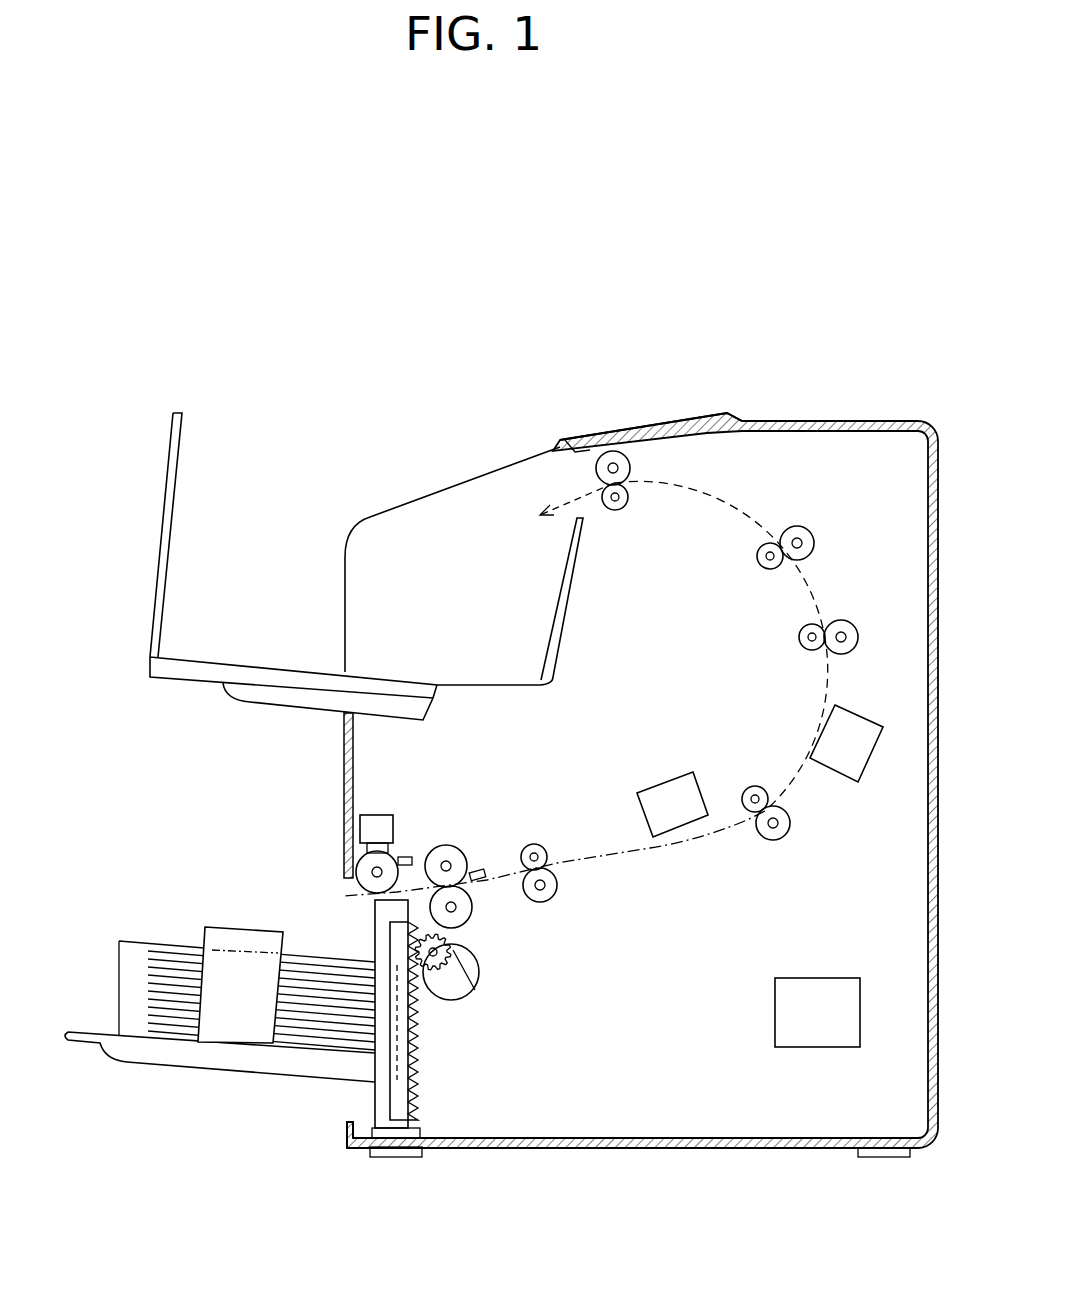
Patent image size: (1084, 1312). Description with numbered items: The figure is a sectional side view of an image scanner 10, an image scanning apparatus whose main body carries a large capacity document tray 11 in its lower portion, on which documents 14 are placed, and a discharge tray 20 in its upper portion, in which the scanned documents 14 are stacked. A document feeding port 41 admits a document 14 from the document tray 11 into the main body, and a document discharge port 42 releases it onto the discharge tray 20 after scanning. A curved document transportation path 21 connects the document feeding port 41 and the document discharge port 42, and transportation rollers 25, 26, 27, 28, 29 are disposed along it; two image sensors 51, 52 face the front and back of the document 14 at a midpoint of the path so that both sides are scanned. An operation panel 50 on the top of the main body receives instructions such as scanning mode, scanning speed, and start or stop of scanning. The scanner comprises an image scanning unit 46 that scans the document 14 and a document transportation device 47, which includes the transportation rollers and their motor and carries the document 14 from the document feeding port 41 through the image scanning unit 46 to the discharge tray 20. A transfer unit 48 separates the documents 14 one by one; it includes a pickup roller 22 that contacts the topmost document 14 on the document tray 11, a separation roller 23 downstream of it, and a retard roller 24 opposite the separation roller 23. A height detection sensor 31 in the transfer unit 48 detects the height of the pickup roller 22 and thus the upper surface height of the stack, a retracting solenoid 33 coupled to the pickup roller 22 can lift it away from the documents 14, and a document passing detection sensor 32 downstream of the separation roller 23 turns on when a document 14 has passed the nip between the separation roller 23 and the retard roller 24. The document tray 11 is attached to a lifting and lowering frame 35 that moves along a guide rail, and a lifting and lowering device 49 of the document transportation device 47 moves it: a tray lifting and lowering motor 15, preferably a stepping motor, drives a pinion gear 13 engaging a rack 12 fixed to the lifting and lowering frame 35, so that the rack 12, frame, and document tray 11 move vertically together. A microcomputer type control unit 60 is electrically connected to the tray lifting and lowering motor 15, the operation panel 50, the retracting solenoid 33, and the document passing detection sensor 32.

The image scanner 10 is at (787, 342).
The document tray 11 is at (142, 1077).
The rack 12 is at (405, 1097).
The pinion gear 13 is at (475, 990).
The documents 14 is at (307, 1032).
The tray lifting and lowering motor 15 is at (455, 992).
The discharge tray 20 is at (257, 387).
The document transportation path 21 is at (743, 513).
The pickup roller 22 is at (358, 867).
The separation roller 23 is at (442, 853).
The retard roller 24 is at (463, 910).
The transportation roller 25 is at (552, 892).
The transportation roller 26 is at (783, 827).
The transportation roller 27 is at (857, 633).
The transportation roller 28 is at (810, 533).
The transportation roller 29 is at (630, 472).
The height detection sensor 31 is at (405, 852).
The document passing detection sensor 32 is at (478, 867).
The retracting solenoid 33 is at (360, 808).
The lifting and lowering frame 35 is at (380, 1093).
The document feeding port 41 is at (340, 897).
The document discharge port 42 is at (565, 480).
The image scanning unit 46 is at (693, 677).
The document transportation device 47 is at (722, 1122).
The transfer unit 48 is at (328, 813).
The lifting and lowering device 49 is at (598, 1028).
The operation panel 50 is at (648, 423).
The image sensor 51 is at (650, 797).
The image sensor 52 is at (865, 755).
The control unit 60 is at (817, 1028).